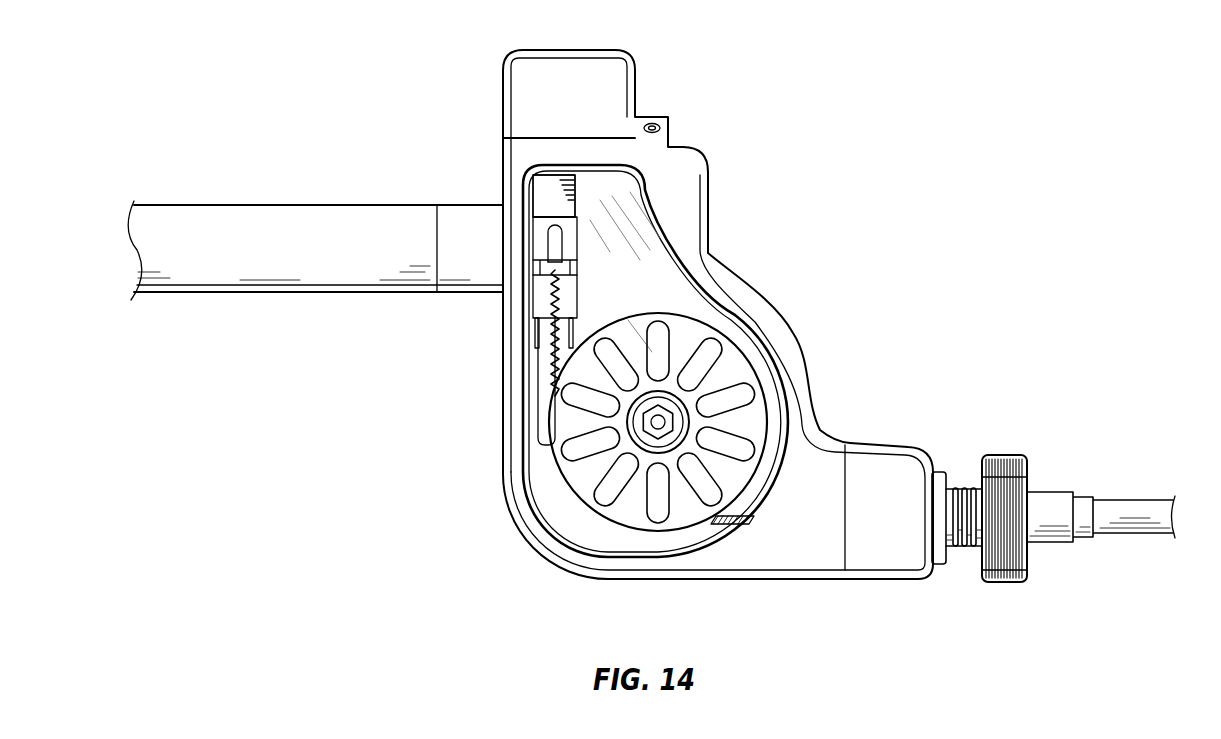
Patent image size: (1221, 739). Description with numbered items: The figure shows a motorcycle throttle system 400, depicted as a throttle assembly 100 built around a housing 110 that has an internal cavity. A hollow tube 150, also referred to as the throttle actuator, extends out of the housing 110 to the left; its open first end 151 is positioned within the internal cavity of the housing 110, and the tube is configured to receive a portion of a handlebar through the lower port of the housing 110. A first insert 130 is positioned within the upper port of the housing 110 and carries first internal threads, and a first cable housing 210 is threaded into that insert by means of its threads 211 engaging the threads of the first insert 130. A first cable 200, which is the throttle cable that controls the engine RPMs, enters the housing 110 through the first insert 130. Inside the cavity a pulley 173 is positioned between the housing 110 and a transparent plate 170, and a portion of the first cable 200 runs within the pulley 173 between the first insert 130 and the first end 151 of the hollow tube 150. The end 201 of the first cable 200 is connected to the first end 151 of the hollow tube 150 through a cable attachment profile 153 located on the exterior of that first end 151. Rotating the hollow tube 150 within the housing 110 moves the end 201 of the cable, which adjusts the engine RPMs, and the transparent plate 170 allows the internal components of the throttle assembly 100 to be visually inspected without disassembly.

The throttle assembly 100 is at (880, 123).
The housing 110 is at (512, 92).
The first insert 130 is at (947, 478).
The hollow tube 150 is at (307, 205).
The first end 151 is at (542, 207).
The cable attachment profile 153 is at (554, 196).
The transparent plate 170 is at (617, 242).
The pulley 173 is at (580, 468).
The first cable 200 is at (548, 330).
The end of the first cable 201 is at (590, 220).
The first cable housing 210 is at (1022, 480).
The threads 211 is at (956, 549).
The motorcycle throttle system 400 is at (1071, 113).